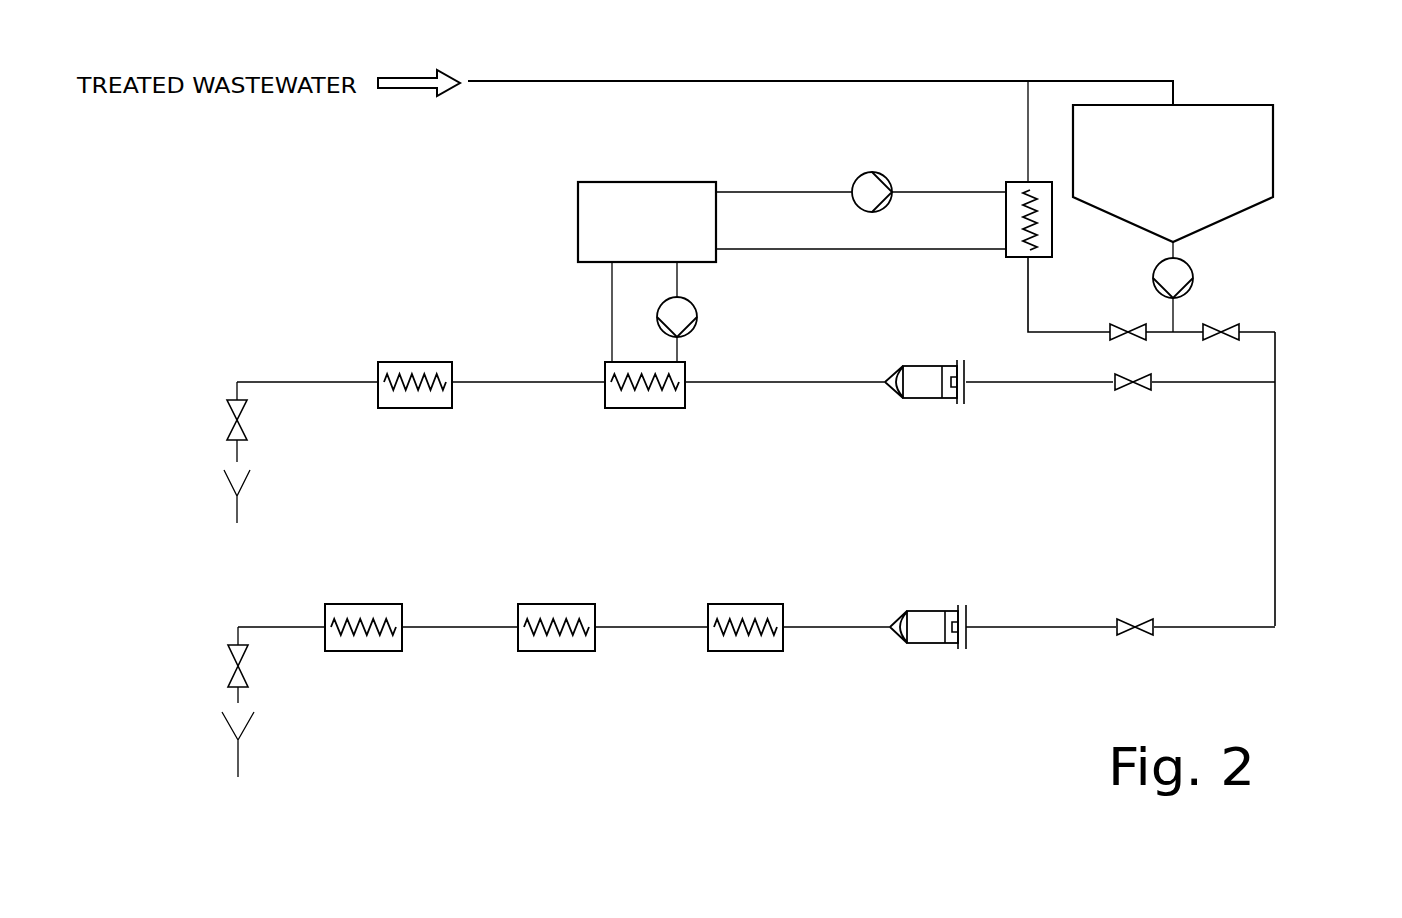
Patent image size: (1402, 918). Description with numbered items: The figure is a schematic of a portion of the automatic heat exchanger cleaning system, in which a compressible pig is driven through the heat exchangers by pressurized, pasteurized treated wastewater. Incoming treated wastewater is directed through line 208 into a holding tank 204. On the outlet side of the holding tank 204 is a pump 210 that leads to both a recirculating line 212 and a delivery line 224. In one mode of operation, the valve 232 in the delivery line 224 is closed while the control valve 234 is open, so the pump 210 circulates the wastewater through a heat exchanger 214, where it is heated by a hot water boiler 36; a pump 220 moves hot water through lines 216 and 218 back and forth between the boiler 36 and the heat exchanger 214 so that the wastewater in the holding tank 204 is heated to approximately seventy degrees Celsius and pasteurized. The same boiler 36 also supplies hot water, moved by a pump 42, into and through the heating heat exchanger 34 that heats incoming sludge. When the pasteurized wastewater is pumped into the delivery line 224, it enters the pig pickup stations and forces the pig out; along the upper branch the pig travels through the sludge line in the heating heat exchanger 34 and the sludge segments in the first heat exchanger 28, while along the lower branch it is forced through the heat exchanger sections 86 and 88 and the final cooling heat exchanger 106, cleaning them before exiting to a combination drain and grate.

The line 208 is at (568, 81).
The holding tank 204 is at (1273, 145).
The pump 210 is at (1193, 277).
The heat exchanger 214 is at (1012, 176).
The boiler 36 is at (652, 182).
The line 216 is at (797, 192).
The pump 220 is at (858, 174).
The line 218 is at (797, 249).
The pump 42 is at (698, 310).
The recirculating line 212 is at (1028, 300).
The control valve 234 is at (1128, 328).
The valve 232 is at (1224, 327).
The delivery line 224 is at (1277, 358).
The first heat exchanger 28 is at (408, 422).
The heating heat exchanger 34 is at (632, 422).
The final cooling heat exchanger 106 is at (365, 663).
The heat exchanger section 88 is at (538, 663).
The heat exchanger section 86 is at (740, 663).